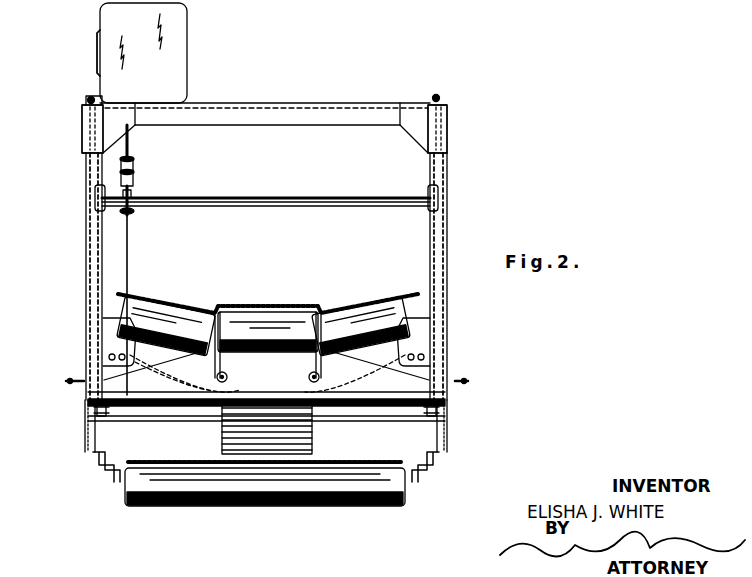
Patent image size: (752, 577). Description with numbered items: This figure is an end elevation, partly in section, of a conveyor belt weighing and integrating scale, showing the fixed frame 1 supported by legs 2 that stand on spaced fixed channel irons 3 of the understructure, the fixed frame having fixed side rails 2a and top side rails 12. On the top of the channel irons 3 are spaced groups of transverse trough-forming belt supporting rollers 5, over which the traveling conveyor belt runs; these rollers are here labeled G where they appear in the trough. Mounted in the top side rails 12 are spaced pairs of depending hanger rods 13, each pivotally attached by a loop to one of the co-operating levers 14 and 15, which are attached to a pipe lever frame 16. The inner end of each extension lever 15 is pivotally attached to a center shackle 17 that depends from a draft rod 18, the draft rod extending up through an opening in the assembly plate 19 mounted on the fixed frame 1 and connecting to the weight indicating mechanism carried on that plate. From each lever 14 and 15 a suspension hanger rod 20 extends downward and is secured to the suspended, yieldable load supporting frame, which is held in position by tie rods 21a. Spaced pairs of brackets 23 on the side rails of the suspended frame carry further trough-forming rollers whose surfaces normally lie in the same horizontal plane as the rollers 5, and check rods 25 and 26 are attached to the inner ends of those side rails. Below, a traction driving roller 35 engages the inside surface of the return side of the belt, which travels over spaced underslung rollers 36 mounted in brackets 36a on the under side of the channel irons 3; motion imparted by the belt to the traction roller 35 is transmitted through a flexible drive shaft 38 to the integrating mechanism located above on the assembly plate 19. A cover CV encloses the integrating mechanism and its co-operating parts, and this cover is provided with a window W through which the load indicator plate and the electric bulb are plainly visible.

The fixed frame 1 is at (458, 133).
The legs 2 is at (87, 240).
The fixed side rails 2a is at (78, 380).
The channel irons 3 is at (90, 438).
The trough-forming belt supporting rollers 5 is at (150, 300).
The conveyor belt G is at (258, 306).
The top side rails 12 is at (95, 112).
The hanger rods 13 is at (96, 170).
The lever 14 is at (135, 163).
The extension lever 15 is at (135, 207).
The pipe lever frame 16 is at (292, 198).
The center shackle 17 is at (137, 183).
The draft rod 18 is at (133, 140).
The assembly plate 19 is at (108, 100).
The suspension hanger rod 20 is at (96, 288).
The tie rods 21a is at (190, 405).
The brackets 23 is at (112, 324).
The check rod 25 is at (98, 410).
The check rod 26 is at (440, 412).
The traction driving roller 35 is at (313, 428).
The underslung rollers 36 is at (230, 505).
The brackets 36a is at (110, 470).
The flexible drive shaft 38 is at (128, 257).
The window W is at (97, 45).
The cover CV is at (188, 36).